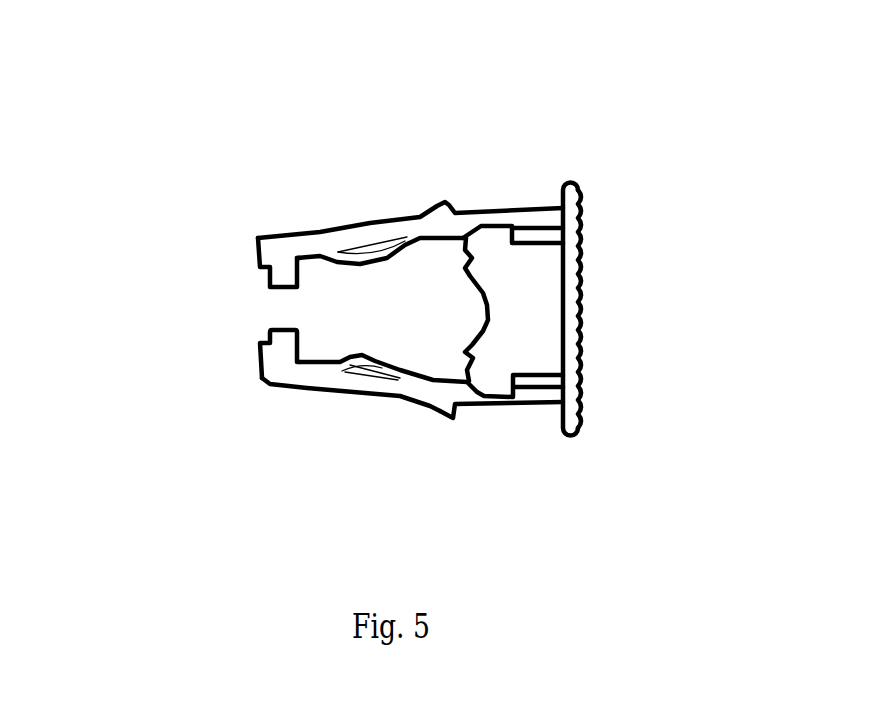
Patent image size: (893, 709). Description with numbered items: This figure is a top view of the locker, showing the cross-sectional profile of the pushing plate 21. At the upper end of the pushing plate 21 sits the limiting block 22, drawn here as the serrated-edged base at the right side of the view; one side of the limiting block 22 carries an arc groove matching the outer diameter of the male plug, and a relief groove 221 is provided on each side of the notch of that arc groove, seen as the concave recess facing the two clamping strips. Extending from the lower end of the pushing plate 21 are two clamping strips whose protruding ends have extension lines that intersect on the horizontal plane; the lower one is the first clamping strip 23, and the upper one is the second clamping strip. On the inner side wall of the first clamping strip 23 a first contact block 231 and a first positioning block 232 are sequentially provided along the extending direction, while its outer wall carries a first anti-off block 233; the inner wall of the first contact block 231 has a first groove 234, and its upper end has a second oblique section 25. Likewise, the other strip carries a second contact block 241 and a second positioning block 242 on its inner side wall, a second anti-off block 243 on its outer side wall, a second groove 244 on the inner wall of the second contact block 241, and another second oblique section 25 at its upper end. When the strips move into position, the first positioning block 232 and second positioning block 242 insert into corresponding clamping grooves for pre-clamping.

The pushing plate 21 is at (581, 364).
The limiting block 22 is at (562, 307).
The relief groove 221 is at (482, 262).
The first clamping strip 23 is at (536, 406).
The first contact block 231 is at (334, 378).
The first positioning block 232 is at (268, 345).
The first anti-off block 233 is at (454, 415).
The first groove 234 is at (370, 366).
The second contact block 241 is at (337, 256).
The second positioning block 242 is at (264, 249).
The second anti-off block 243 is at (446, 207).
The second groove 244 is at (368, 259).
The second oblique section 25 is at (385, 251).